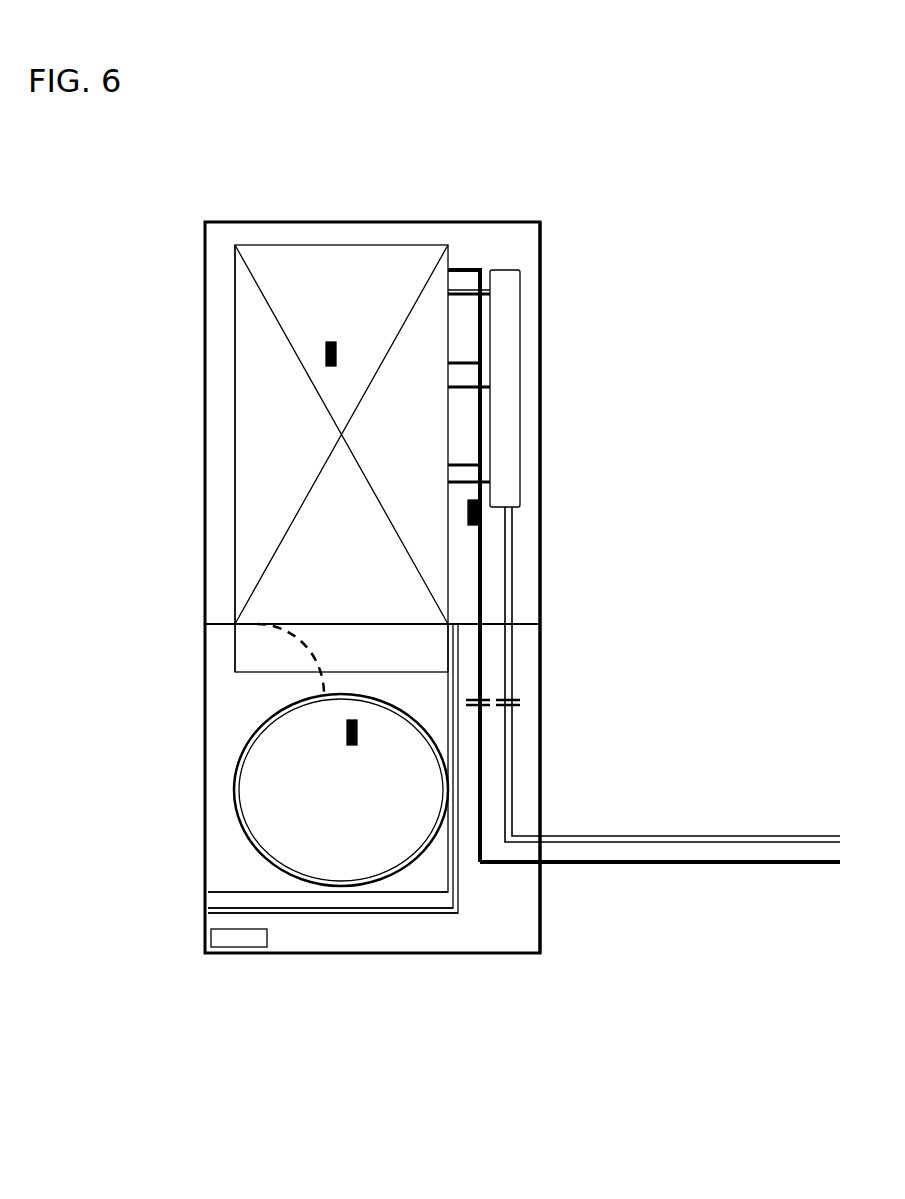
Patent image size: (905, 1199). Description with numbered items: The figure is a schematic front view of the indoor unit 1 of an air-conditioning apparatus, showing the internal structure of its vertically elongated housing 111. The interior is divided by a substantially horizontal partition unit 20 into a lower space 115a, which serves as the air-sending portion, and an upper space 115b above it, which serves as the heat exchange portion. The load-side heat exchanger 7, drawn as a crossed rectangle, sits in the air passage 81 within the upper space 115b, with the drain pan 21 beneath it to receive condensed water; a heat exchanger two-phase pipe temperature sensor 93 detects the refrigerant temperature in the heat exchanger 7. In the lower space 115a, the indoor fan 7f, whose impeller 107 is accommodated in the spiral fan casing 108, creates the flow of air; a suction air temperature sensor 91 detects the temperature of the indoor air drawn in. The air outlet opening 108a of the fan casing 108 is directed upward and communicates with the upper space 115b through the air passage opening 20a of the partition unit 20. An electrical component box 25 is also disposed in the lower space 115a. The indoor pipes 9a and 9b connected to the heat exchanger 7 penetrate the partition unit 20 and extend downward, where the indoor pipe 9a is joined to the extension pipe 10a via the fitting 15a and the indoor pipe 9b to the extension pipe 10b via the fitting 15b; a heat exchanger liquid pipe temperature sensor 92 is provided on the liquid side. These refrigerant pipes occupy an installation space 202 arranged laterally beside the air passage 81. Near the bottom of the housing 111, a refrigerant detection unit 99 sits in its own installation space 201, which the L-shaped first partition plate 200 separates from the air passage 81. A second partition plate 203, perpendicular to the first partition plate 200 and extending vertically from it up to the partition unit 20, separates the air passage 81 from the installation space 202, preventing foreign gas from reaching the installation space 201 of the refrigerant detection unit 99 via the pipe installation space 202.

The indoor unit 1 is at (176, 210).
The housing 111 is at (543, 262).
The load-side heat exchanger 7 is at (235, 493).
The air passage 81 is at (413, 593).
The partition unit 20 is at (230, 626).
The drain pan 21 is at (236, 617).
The heat exchanger two-phase pipe temperature sensor 93 is at (327, 352).
The upper space 115b is at (223, 392).
The air passage opening 20a is at (322, 618).
The electrical component box 25 is at (240, 648).
The indoor pipe 9b is at (478, 535).
The indoor pipe 9a is at (515, 528).
The heat exchanger liquid pipe temperature sensor 92 is at (480, 513).
The extension pipe 10b is at (681, 868).
The extension pipe 10a is at (705, 833).
The fitting 15b is at (485, 700).
The fitting 15a is at (513, 698).
The indoor fan 7f is at (295, 754).
The suction air temperature sensor 91 is at (347, 742).
The air outlet opening 108a is at (372, 628).
The installation space for refrigerant pipes 202 is at (522, 785).
The second partition plate 203 is at (450, 800).
The refrigerant detection unit 99 is at (228, 940).
The lower space 115a is at (283, 882).
The first partition plate 200 is at (335, 913).
The installation space for refrigerant detection unit 201 is at (368, 940).
The impeller 107 is at (372, 872).
The fan casing 108 is at (408, 870).